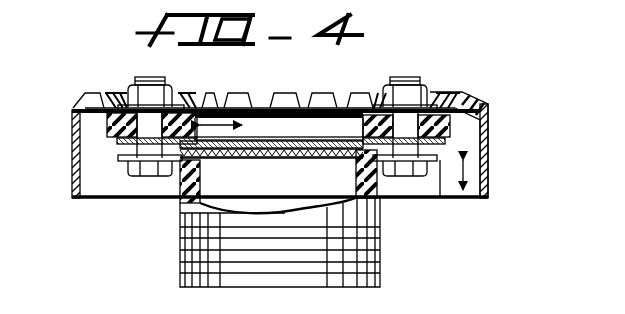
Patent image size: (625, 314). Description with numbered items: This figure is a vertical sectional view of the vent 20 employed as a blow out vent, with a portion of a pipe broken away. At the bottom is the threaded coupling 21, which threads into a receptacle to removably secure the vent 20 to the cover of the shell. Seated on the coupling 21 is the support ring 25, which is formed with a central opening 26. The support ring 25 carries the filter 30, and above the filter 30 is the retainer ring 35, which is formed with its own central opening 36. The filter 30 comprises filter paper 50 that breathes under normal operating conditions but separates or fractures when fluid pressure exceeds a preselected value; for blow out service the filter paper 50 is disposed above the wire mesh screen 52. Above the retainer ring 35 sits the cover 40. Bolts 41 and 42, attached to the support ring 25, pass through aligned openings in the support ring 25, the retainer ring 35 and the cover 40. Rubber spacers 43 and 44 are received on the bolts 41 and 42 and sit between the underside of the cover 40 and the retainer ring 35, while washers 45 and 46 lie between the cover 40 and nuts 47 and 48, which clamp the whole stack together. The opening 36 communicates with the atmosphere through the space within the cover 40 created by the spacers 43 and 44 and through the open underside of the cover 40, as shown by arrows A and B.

The vent 20 is at (72, 66).
The threaded coupling 21 is at (180, 267).
The support ring 25 is at (440, 160).
The central opening 26 is at (349, 159).
The filter 30 is at (286, 130).
The retainer ring 35 is at (240, 141).
The central opening 36 is at (352, 130).
The cover 40 is at (72, 174).
The bolt 41 is at (150, 172).
The bolt 42 is at (403, 172).
The rubber spacer 43 is at (110, 124).
The rubber spacer 44 is at (472, 90).
The washer 45 is at (130, 96).
The washer 46 is at (385, 92).
The nut 47 is at (150, 96).
The nut 48 is at (405, 86).
The filter paper 50 is at (263, 137).
The wire mesh screen 52 is at (261, 160).
The arrow A is at (208, 108).
The arrow B is at (452, 178).